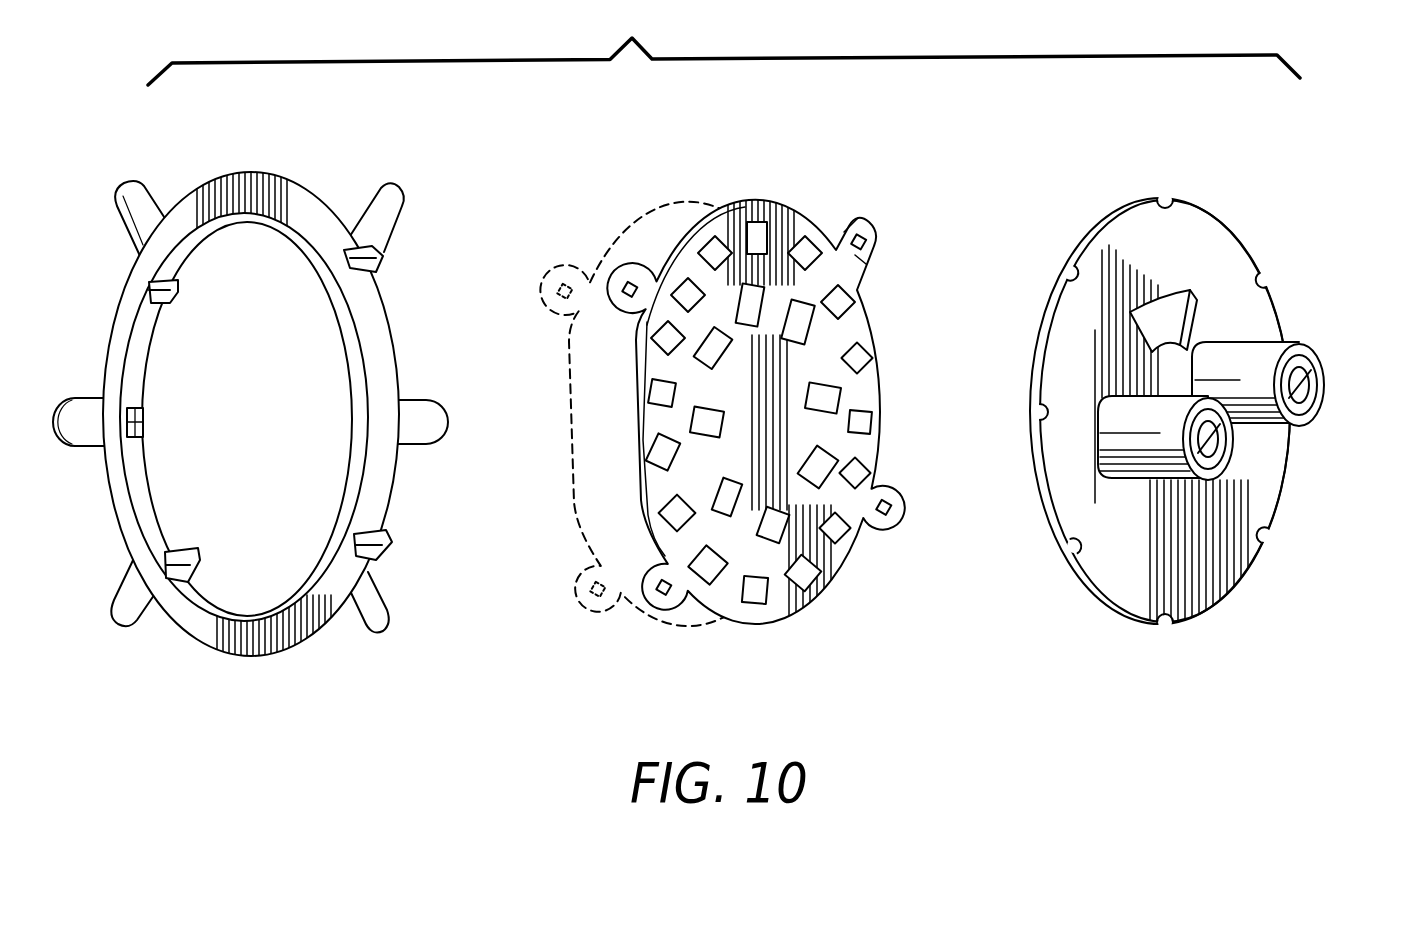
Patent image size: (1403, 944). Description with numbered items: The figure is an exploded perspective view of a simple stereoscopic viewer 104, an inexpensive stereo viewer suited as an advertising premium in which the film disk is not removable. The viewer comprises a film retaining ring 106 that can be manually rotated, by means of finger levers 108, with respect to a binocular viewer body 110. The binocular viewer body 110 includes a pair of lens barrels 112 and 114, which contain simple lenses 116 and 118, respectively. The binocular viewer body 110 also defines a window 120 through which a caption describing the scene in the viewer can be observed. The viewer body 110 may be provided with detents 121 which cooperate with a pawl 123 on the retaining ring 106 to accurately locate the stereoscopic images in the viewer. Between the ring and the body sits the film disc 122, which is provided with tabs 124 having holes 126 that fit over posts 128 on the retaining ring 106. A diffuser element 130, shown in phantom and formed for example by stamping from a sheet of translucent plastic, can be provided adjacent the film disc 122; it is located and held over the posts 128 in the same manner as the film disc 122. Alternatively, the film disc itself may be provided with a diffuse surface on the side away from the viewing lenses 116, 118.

The simple stereoscopic viewer 104 is at (632, 38).
The film retaining ring 106 is at (301, 203).
The finger levers 108 is at (143, 202).
The binocular viewer body 110 is at (1073, 268).
The lens barrel 112 is at (1255, 352).
The lens barrel 114 is at (1112, 440).
The simple lens 116 is at (1307, 382).
The simple lens 118 is at (1226, 455).
The window 120 is at (1178, 302).
The detents 121 is at (1076, 556).
The film disc 122 is at (622, 420).
The pawl 123 is at (143, 415).
The tabs 124 is at (860, 226).
The holes 126 is at (870, 260).
The posts 128 is at (150, 288).
The diffuser element 130 is at (568, 495).